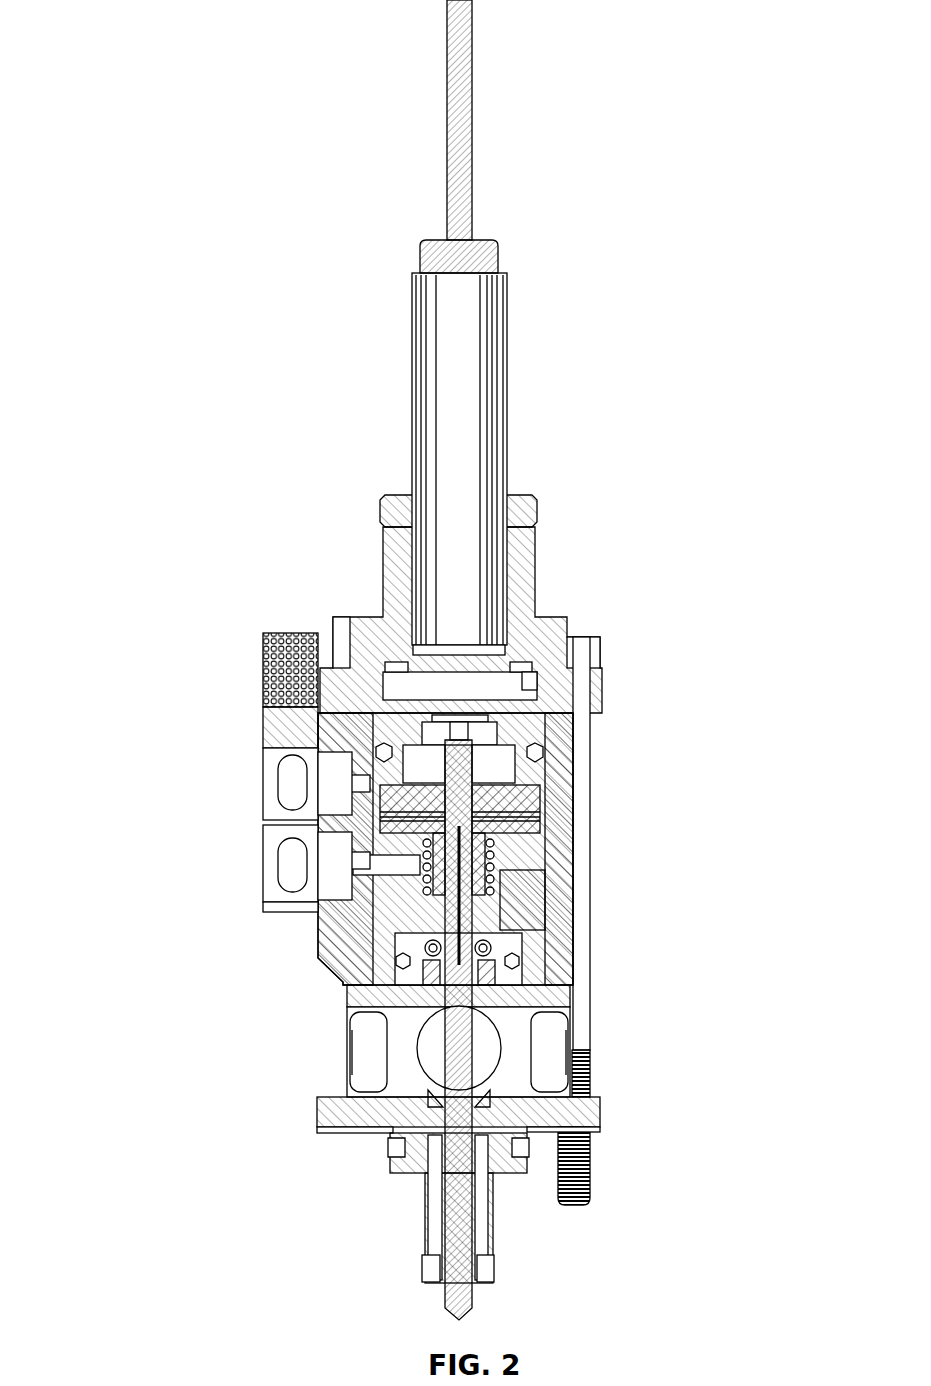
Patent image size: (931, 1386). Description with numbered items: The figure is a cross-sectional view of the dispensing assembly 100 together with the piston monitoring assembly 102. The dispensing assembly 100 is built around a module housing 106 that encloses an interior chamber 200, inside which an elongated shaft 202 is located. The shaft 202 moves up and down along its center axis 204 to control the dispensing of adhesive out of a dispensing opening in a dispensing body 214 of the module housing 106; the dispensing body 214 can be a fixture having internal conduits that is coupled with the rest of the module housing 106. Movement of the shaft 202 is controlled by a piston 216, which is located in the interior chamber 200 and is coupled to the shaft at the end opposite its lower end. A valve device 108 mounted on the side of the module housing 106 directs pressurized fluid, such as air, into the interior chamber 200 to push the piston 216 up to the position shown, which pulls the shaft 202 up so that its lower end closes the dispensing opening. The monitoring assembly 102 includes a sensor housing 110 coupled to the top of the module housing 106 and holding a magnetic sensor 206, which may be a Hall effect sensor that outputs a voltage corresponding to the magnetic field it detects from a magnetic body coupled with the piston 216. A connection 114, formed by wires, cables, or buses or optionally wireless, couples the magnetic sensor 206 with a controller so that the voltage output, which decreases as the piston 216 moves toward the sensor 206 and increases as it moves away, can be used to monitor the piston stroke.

The dispensing assembly 100 is at (686, 668).
The piston monitoring assembly 102 is at (190, 3).
The module housing 106 is at (325, 968).
The valve device 108 is at (268, 912).
The sensor housing 110 is at (383, 560).
The connection 114 is at (460, 130).
The interior chamber 200 is at (557, 913).
The elongated shaft 202 is at (460, 1030).
The center axis 204 is at (458, 913).
The magnetic sensor 206 is at (473, 487).
The dispensing body 214 is at (357, 1152).
The piston 216 is at (487, 827).